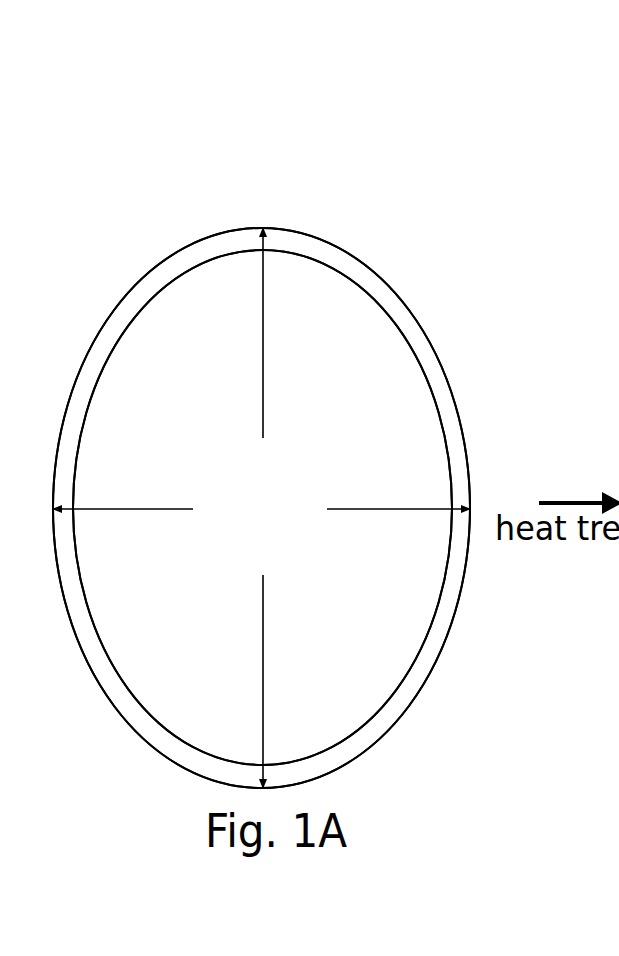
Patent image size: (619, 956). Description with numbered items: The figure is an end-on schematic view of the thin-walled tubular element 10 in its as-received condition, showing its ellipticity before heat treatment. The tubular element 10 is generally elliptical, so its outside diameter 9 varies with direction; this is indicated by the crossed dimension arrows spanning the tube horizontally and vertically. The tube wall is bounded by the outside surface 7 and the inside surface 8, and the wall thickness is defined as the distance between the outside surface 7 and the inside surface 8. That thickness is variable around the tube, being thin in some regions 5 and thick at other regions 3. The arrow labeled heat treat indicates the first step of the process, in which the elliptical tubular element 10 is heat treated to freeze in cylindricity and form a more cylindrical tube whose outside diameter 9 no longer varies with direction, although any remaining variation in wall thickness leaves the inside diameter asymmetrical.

The thin-walled tubular element 10 is at (173, 188).
The thick regions 3 is at (115, 325).
The thin regions 5 is at (447, 615).
The outside surface 7 is at (369, 268).
The inside surface 8 is at (352, 292).
The outside diameter 9 is at (261, 508).